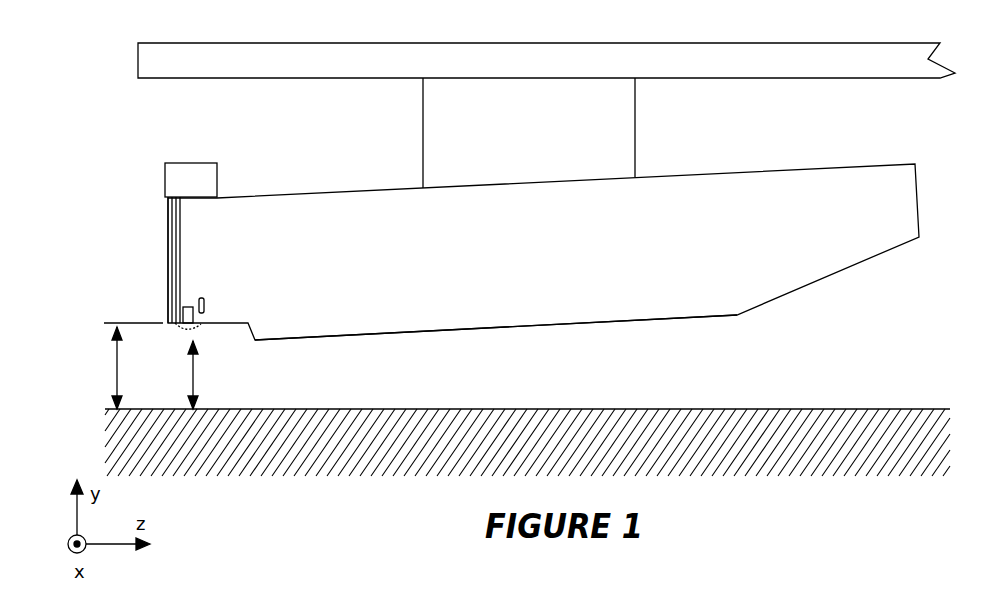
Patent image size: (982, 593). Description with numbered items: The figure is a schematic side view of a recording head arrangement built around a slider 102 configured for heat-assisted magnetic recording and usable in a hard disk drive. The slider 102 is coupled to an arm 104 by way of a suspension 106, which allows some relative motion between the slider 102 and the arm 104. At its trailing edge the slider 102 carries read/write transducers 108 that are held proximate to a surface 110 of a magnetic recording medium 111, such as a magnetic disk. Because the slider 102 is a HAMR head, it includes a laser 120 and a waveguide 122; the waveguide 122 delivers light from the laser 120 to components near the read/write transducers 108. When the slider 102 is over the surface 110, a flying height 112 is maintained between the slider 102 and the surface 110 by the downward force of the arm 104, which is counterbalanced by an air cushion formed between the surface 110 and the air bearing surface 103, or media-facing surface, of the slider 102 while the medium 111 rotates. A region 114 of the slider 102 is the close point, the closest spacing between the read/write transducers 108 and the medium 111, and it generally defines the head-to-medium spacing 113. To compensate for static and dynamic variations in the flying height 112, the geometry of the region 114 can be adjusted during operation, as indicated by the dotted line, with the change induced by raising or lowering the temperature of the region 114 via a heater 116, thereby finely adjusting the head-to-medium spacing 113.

The slider 102 is at (792, 180).
The air bearing surface 103 is at (372, 335).
The arm 104 is at (853, 57).
The suspension 106 is at (635, 122).
The read/write transducers 108 is at (183, 303).
The surface 110 is at (797, 409).
The magnetic recording medium 111 is at (812, 463).
The flying height 112 is at (115, 366).
The head-to-medium spacing 113 is at (172, 375).
The region 114 is at (200, 333).
The heater 116 is at (202, 300).
The laser 120 is at (190, 173).
The waveguide 122 is at (172, 235).